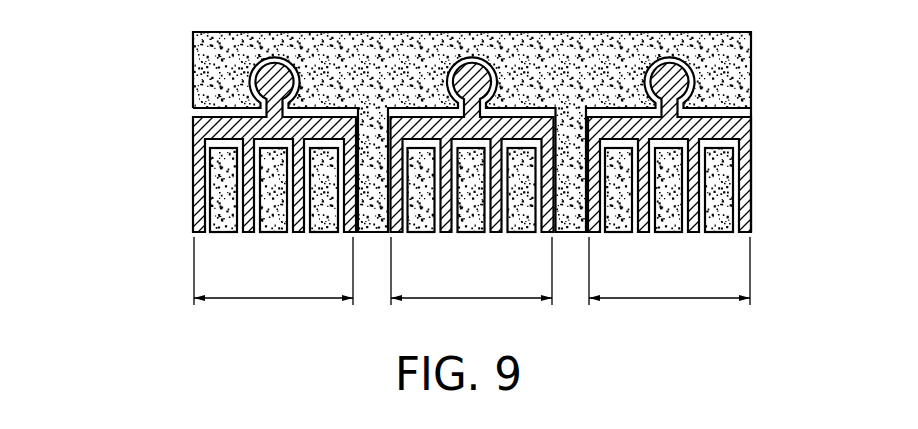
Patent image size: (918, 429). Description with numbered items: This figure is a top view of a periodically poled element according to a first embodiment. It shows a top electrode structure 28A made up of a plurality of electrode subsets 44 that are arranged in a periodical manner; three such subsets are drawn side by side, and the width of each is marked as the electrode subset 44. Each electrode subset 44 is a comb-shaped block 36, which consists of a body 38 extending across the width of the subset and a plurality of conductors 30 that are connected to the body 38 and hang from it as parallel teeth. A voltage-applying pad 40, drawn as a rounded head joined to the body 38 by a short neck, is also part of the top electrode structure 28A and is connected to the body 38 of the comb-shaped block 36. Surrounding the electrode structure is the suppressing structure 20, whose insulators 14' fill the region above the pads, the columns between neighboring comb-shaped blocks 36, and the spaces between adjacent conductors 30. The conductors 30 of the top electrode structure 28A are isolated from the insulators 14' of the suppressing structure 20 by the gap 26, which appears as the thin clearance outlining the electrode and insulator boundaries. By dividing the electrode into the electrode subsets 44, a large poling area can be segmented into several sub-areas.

The insulator 14' is at (495, 132).
The gap 26 is at (730, 110).
The suppressing structure 20 is at (438, 168).
The top electrode structure 28A is at (393, 147).
The voltage-applying pad 40 is at (273, 85).
The comb-shaped block 36 is at (423, 170).
The body 38 is at (197, 124).
The conductor 30 is at (444, 185).
The electrode subset 44 is at (472, 271).